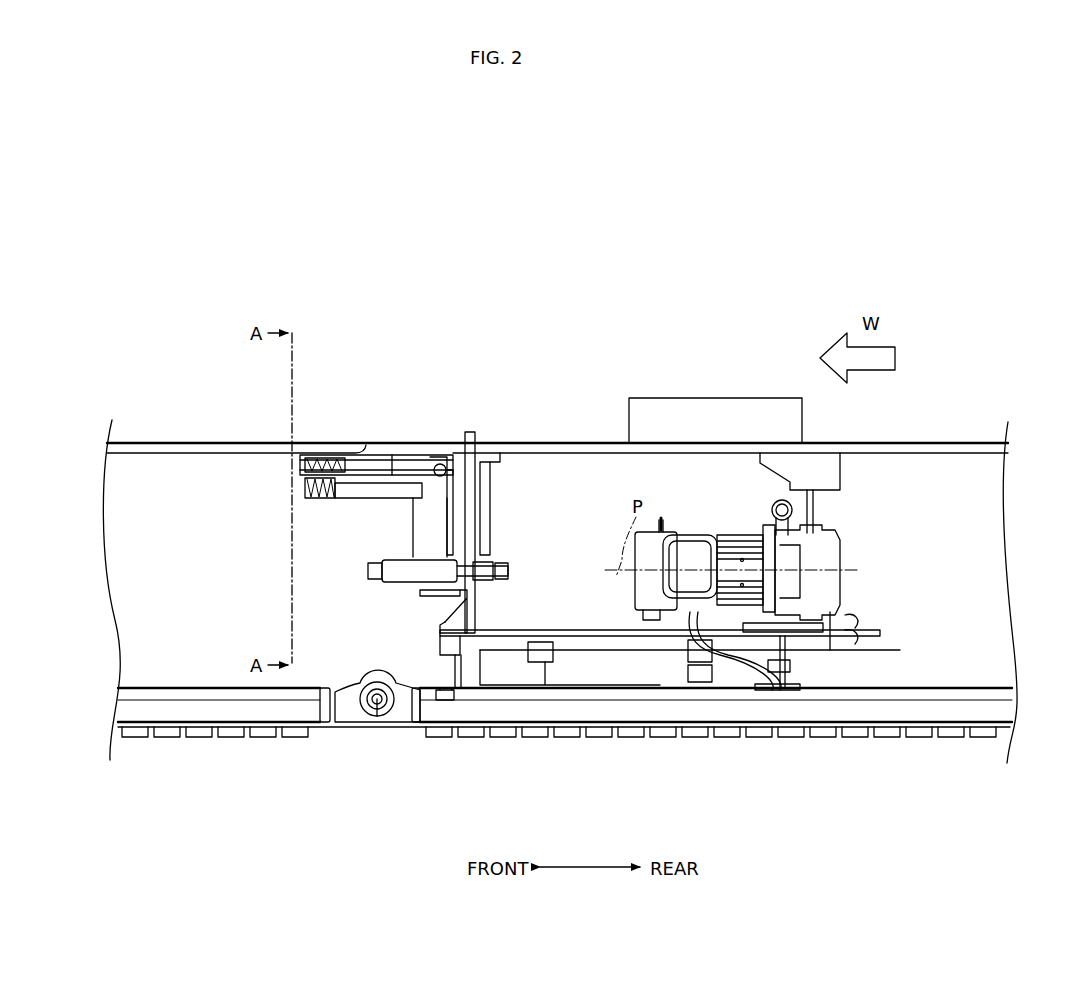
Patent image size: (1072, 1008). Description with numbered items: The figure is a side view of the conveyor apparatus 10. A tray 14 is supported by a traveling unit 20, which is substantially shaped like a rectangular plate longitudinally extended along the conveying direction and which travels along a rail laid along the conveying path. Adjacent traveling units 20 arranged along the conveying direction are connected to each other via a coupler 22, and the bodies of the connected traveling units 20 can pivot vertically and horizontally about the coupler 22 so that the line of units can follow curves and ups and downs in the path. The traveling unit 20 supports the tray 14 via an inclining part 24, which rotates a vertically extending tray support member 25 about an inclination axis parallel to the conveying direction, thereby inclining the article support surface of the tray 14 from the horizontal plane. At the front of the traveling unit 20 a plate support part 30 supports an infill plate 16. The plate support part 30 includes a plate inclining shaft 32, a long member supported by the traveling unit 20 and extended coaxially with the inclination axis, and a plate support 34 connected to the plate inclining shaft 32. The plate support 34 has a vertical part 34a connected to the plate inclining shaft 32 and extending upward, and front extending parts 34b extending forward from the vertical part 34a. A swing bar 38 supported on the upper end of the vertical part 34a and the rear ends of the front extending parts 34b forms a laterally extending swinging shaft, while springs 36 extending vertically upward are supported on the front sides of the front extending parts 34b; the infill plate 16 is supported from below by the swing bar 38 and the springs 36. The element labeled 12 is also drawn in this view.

The conveyor apparatus 10 is at (120, 232).
The housing box 12 is at (698, 415).
The tray 14 is at (213, 437).
The infill plate 16 is at (408, 453).
The traveling unit 20 is at (240, 708).
The coupler 22 is at (358, 721).
The inclining part 24 is at (848, 551).
The tray support member 25 is at (816, 508).
The plate support part 30 is at (395, 543).
The plate inclining shaft 32 is at (368, 571).
The plate support 34 is at (436, 485).
The vertical part 34a is at (420, 515).
The front extending parts 34b is at (355, 493).
The springs 36 is at (343, 466).
The swing bar 38 is at (443, 455).